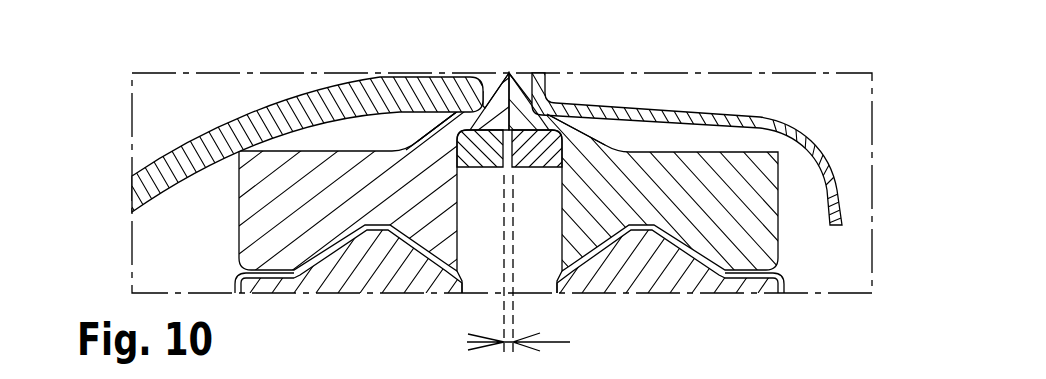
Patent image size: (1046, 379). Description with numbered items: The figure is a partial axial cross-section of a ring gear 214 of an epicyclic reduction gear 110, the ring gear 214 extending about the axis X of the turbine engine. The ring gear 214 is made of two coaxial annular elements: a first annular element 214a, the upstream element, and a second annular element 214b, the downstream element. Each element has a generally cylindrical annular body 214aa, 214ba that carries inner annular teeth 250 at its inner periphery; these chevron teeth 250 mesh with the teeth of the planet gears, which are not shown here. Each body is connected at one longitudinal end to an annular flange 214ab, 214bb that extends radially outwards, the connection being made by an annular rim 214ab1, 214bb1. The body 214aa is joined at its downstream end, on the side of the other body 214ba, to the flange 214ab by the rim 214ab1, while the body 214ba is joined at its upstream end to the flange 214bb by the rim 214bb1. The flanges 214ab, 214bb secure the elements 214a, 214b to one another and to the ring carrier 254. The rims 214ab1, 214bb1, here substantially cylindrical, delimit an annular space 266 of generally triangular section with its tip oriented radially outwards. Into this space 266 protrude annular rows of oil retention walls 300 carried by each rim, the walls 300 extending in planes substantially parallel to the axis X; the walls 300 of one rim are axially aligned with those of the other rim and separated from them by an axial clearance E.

The reduction gear 110 is at (790, 101).
The ring gear 214 is at (501, 148).
The first annular element 214a is at (276, 153).
The annular body 214aa is at (258, 200).
The annular flange 214ab is at (497, 80).
The annular rim 214ab1 is at (435, 128).
The second annular element 214b is at (721, 148).
The annular body 214ba is at (753, 215).
The annular flange 214bb is at (523, 77).
The annular rim 214bb1 is at (579, 91).
The ring carrier 254 is at (287, 107).
The oil retention wall 300 is at (557, 150).
The inner annular teeth 250 is at (295, 258).
The annular space 266 is at (520, 263).
The axial clearance E is at (557, 342).